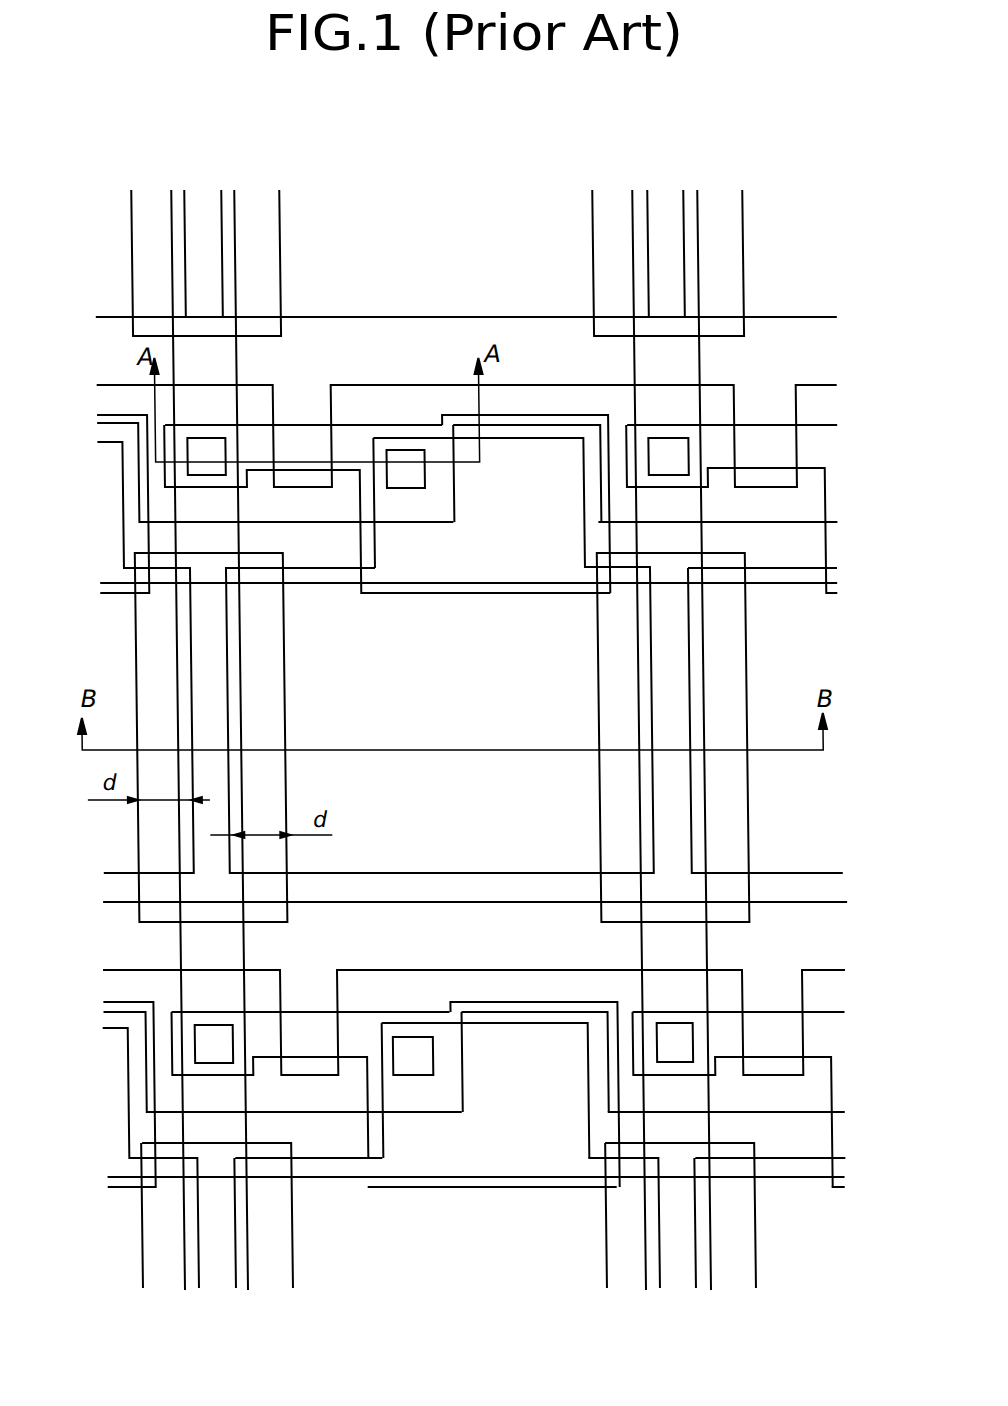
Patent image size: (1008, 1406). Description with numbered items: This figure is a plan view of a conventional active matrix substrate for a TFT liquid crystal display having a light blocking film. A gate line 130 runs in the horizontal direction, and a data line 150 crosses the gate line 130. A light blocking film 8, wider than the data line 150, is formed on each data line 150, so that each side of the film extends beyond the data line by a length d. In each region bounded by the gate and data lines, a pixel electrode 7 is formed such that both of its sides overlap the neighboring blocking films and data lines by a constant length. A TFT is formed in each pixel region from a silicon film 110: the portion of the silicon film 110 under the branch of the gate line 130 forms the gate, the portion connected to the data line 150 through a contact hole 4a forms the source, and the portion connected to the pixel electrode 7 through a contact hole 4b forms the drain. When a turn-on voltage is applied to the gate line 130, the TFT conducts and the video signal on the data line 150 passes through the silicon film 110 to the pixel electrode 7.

The silicon film 110 is at (358, 407).
The gate line 130 is at (307, 340).
The data line 150 is at (194, 350).
The contact hole 4a is at (200, 448).
The contact hole 4b is at (414, 478).
The pixel electrode 7 is at (428, 685).
The light blocking film 8 is at (143, 647).